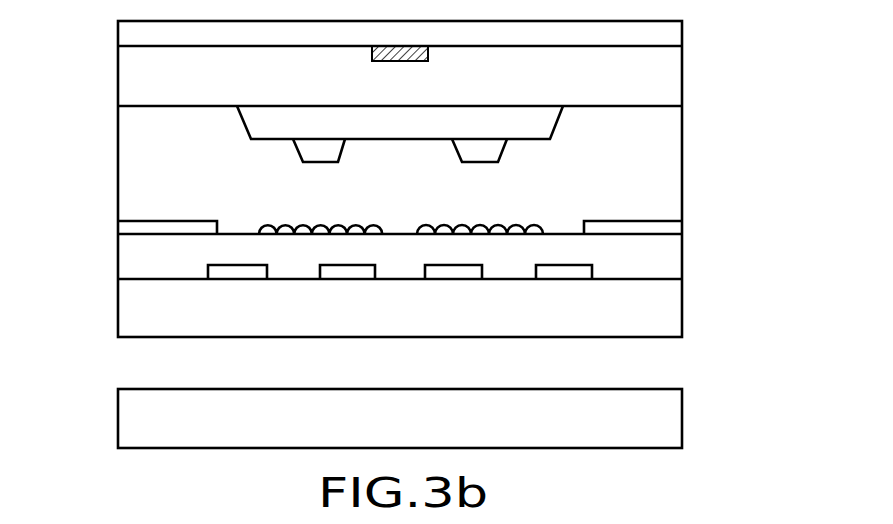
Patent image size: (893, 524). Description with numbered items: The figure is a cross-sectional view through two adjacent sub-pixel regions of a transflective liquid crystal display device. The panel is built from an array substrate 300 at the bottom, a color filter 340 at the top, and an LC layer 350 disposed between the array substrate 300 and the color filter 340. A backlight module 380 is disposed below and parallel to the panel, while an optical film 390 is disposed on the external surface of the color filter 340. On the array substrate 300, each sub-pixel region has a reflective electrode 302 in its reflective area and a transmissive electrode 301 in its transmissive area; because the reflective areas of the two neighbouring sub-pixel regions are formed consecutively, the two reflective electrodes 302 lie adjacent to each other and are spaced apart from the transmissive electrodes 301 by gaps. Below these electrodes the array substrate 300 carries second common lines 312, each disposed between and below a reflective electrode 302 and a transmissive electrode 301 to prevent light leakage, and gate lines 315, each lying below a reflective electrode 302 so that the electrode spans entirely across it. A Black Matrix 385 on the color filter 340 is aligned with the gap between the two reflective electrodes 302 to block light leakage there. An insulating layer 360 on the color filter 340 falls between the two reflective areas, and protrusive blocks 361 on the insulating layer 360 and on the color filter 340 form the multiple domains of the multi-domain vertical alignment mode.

The optical film 390 is at (672, 31).
The color filter 340 is at (704, 80).
The Black Matrix 385 is at (372, 54).
The LC layer 350 is at (672, 158).
The insulating layer 360 is at (267, 123).
The protrusive block 361 is at (313, 153).
The transmissive electrode 301 is at (128, 229).
The reflective electrode 302 is at (303, 229).
The array substrate 300 is at (704, 280).
The second common line 312 is at (233, 272).
The gate line 315 is at (355, 272).
The backlight module 380 is at (580, 426).